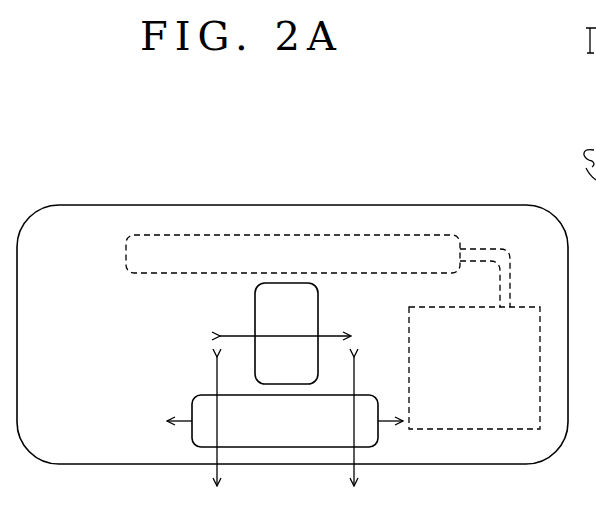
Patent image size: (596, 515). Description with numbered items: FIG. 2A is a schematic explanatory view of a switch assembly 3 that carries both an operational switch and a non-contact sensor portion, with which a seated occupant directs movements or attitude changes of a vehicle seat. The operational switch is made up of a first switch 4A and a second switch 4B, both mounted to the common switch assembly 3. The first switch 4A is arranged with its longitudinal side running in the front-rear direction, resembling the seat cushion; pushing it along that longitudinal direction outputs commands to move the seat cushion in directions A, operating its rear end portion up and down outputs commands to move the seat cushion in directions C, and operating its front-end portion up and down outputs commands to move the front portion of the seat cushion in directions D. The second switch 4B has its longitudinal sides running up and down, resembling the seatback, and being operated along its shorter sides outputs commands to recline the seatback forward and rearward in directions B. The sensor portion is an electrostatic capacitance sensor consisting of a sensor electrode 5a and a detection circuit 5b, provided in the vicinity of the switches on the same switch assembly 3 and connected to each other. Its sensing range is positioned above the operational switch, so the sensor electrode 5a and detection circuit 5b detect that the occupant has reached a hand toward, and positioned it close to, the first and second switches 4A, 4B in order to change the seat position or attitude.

The switch assembly 3 is at (130, 204).
The first switch 4A is at (297, 447).
The second switch 4B is at (318, 305).
The sensor electrode 5a is at (363, 236).
The detection circuit 5b is at (490, 431).
The directions A is at (184, 422).
The directions B is at (242, 335).
The directions C is at (356, 384).
The directions D is at (217, 384).